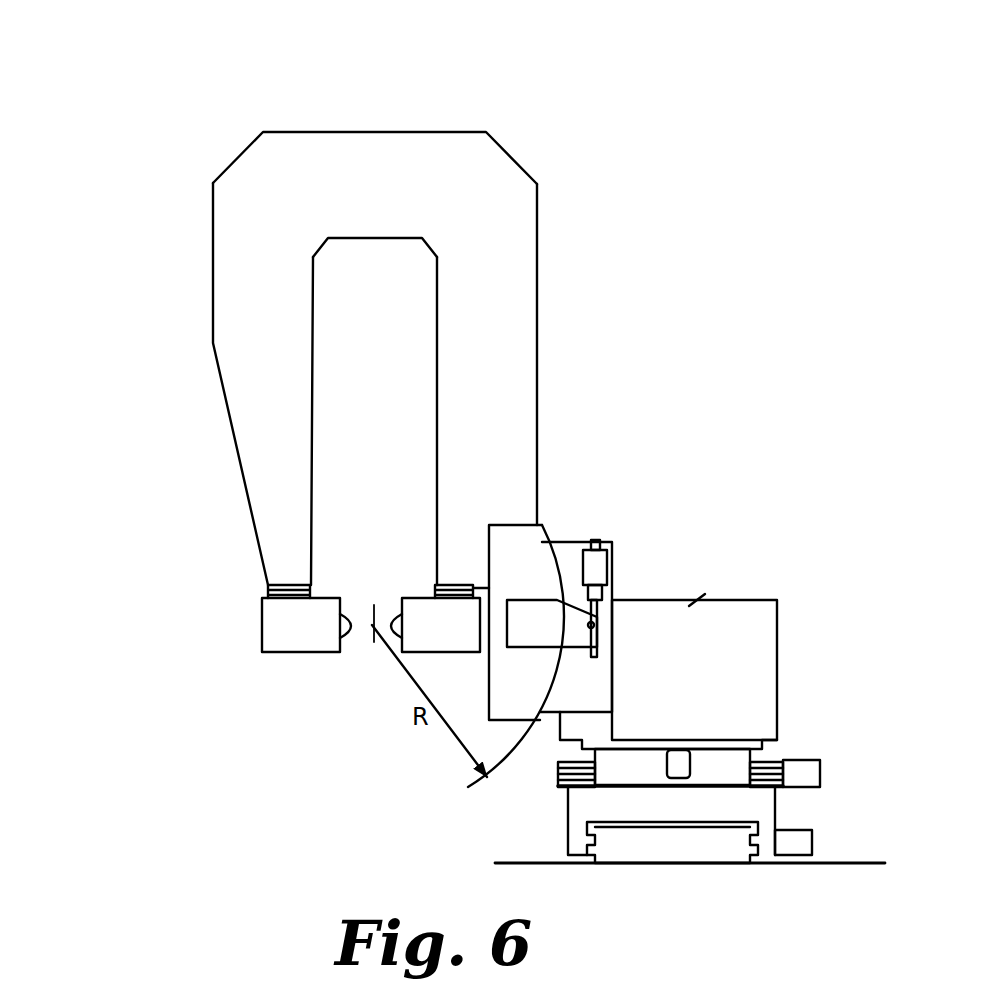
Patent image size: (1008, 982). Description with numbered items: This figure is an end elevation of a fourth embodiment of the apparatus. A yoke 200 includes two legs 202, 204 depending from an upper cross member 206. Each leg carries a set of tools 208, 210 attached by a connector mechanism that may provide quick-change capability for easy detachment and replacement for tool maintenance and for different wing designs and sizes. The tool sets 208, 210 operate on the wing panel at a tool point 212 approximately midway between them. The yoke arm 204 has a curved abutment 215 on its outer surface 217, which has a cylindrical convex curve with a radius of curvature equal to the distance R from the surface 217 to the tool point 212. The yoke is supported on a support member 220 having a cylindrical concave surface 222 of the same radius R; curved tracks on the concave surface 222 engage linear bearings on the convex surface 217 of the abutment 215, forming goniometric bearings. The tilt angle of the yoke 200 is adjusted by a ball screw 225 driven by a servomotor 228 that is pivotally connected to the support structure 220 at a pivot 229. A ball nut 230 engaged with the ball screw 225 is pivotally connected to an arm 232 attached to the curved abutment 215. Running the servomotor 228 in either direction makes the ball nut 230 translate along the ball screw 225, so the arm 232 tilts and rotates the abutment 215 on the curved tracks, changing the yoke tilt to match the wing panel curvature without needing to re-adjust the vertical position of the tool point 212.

The yoke 200 is at (293, 303).
The leg 202 is at (273, 442).
The leg 204 is at (475, 493).
The upper cross member 206 is at (280, 213).
The set of tools 208 is at (295, 623).
The set of tools 210 is at (422, 613).
The tool point 212 is at (372, 632).
The curved abutment 215 is at (514, 540).
The outer surface 217 is at (545, 547).
The support member 220 is at (568, 547).
The cylindrical concave surface 222 is at (553, 690).
The ball screw 225 is at (605, 598).
The servomotor 228 is at (598, 568).
The pivot 229 is at (597, 530).
The ball nut 230 is at (765, 537).
The arm 232 is at (590, 636).